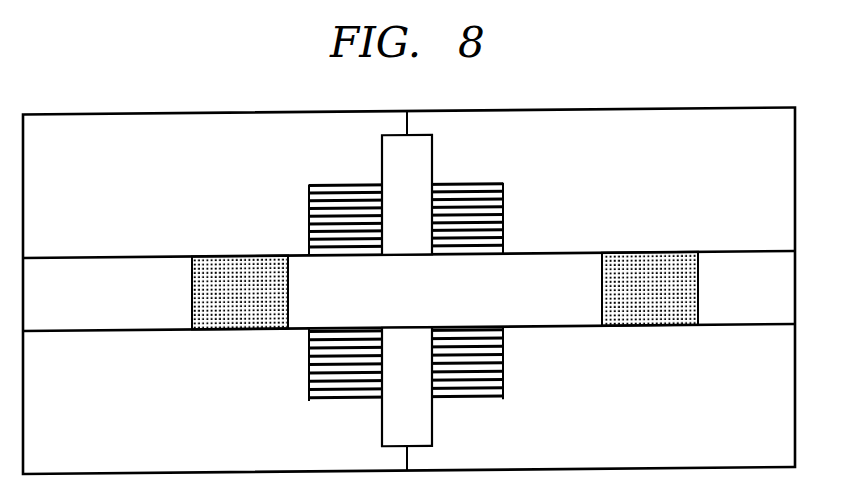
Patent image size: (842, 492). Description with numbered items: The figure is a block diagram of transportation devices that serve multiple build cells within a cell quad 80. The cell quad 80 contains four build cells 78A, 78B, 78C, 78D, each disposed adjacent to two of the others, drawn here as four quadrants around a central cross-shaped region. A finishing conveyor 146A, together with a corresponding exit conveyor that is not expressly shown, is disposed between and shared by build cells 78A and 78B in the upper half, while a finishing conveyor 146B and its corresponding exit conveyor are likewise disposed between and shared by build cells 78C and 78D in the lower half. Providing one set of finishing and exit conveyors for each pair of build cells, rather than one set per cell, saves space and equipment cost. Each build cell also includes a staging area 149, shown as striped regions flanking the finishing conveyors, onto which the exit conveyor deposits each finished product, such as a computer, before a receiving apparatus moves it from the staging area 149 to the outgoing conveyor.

The cell quad 80 is at (651, 109).
The build cell 78A is at (191, 200).
The build cell 78B is at (668, 200).
The build cell 78C is at (192, 414).
The build cell 78D is at (676, 414).
The finishing conveyor 146A is at (432, 162).
The finishing conveyor 146B is at (433, 424).
The staging area 149 is at (505, 204).